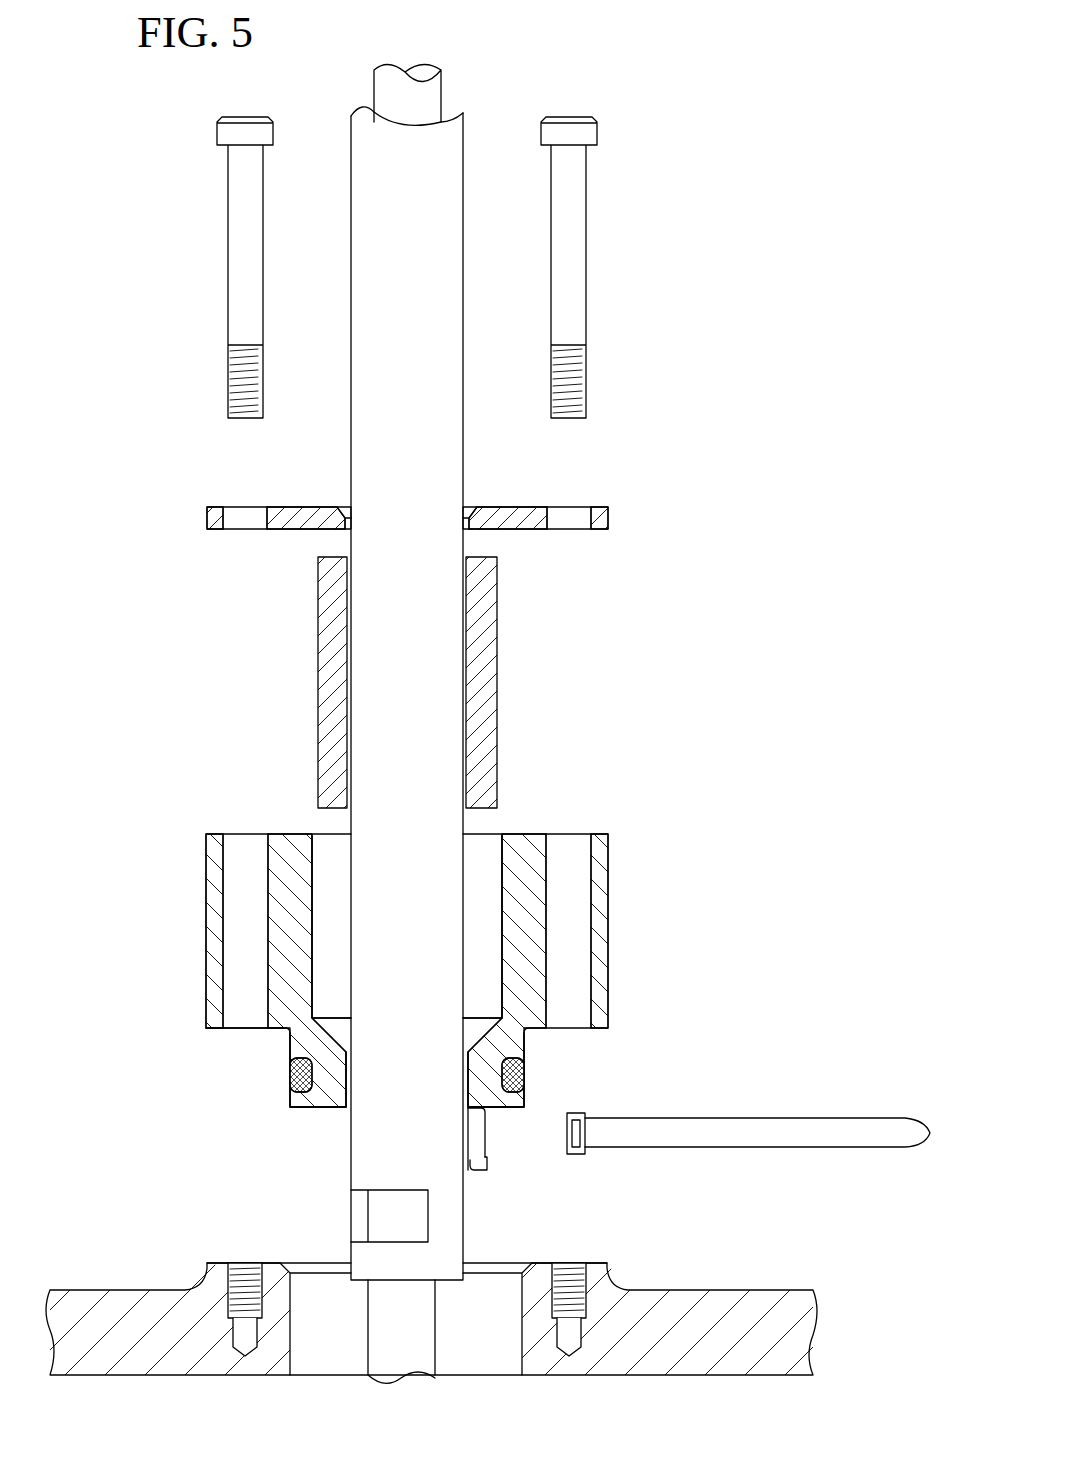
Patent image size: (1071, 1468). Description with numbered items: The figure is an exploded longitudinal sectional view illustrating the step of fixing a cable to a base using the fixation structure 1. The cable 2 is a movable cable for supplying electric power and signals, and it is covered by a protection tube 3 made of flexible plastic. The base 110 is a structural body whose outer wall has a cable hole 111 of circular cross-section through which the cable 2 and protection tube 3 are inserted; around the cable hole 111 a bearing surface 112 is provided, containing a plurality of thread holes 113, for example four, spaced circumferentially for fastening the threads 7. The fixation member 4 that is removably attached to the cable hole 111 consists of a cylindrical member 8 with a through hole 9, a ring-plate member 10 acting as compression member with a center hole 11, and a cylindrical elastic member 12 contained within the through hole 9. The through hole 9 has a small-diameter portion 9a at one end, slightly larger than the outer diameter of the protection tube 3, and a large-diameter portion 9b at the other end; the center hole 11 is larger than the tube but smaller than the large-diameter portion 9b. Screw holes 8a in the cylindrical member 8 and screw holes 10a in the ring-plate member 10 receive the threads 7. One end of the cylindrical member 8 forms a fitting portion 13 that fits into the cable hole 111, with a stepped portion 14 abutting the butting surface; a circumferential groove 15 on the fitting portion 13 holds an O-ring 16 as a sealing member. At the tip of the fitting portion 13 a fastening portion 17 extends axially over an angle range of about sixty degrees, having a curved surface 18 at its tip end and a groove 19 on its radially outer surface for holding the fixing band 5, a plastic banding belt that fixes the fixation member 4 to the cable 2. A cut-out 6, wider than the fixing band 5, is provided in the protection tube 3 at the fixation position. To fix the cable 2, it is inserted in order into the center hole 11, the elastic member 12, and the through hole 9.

The fixation structure 1 is at (104, 662).
The cable 2 is at (374, 88).
The protection tube 3 is at (433, 343).
The fixation member 4 is at (497, 1186).
The fixing band 5 is at (723, 1133).
The cut-out 6 is at (368, 1208).
The threads 7 is at (217, 127).
The cylindrical member 8 is at (626, 858).
The screw holes 8a is at (220, 907).
The through hole 9 is at (432, 975).
The small-diameter portion 9a is at (350, 1100).
The large-diameter portion 9b is at (505, 845).
The ring-plate member 10 is at (626, 519).
The screw holes 10a is at (225, 518).
The center hole 11 is at (465, 530).
The elastic member 12 is at (498, 652).
The fitting portion 13 is at (291, 1097).
The stepped portion 14 is at (207, 1040).
The circumferential groove 15 is at (292, 1072).
The O-ring 16 is at (520, 1071).
The fastening portion 17 is at (475, 1123).
The curved surface 18 is at (468, 1168).
The groove 19 is at (480, 1137).
The base 110 is at (756, 1282).
The cable hole 111 is at (290, 1297).
The bearing surface 112 is at (593, 1264).
The thread holes 113 is at (258, 1277).